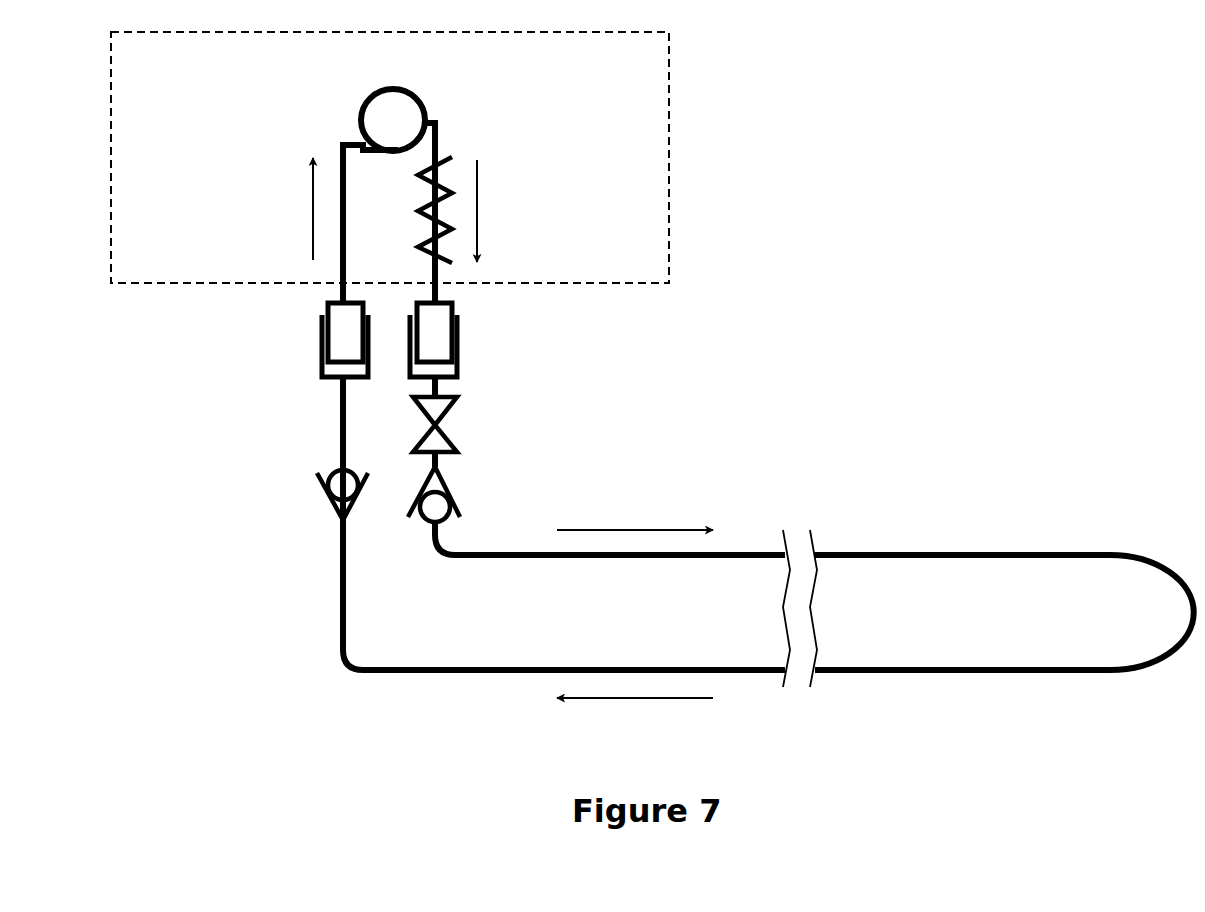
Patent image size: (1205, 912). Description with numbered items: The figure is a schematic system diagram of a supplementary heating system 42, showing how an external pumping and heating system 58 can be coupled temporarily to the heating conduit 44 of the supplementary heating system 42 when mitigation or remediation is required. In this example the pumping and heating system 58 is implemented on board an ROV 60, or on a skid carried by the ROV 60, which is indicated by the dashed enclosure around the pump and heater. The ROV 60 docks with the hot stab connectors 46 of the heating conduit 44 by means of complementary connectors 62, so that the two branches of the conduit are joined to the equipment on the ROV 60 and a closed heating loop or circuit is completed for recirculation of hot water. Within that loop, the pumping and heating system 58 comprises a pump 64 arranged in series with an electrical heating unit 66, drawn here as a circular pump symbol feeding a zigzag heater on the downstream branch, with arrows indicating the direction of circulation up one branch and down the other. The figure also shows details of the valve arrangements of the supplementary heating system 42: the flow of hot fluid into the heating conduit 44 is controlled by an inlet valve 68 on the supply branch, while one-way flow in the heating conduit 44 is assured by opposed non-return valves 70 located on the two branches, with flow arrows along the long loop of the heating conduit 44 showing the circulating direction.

The supplementary heating system 42 is at (282, 602).
The heating conduit 44 is at (875, 553).
The hot stab connectors 46 is at (318, 368).
The pumping and heating system 58 is at (312, 125).
The ROV 60 is at (669, 103).
The complementary connectors 62 is at (340, 340).
The pump 64 is at (403, 108).
The electrical heating unit 66 is at (425, 240).
The inlet valve 68 is at (437, 413).
The non-return valves 70 is at (330, 483).